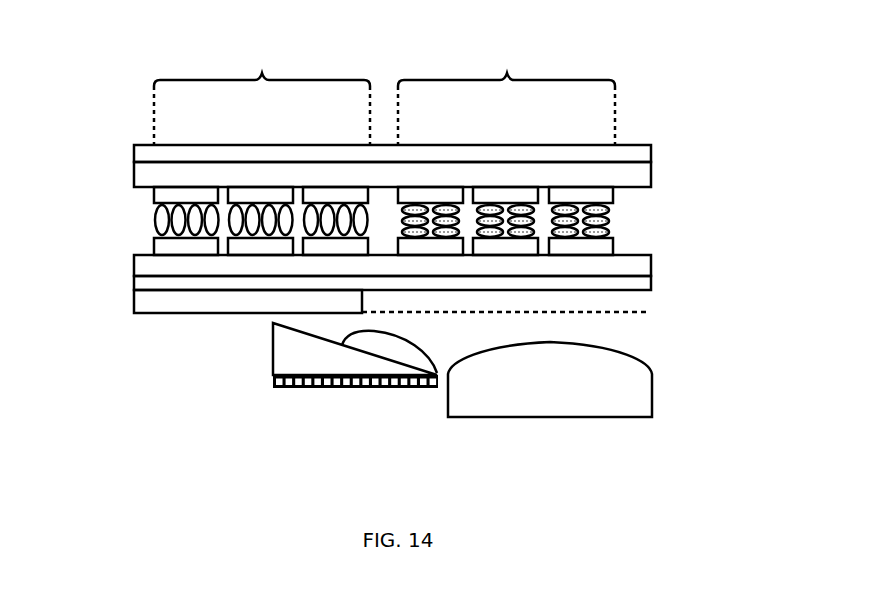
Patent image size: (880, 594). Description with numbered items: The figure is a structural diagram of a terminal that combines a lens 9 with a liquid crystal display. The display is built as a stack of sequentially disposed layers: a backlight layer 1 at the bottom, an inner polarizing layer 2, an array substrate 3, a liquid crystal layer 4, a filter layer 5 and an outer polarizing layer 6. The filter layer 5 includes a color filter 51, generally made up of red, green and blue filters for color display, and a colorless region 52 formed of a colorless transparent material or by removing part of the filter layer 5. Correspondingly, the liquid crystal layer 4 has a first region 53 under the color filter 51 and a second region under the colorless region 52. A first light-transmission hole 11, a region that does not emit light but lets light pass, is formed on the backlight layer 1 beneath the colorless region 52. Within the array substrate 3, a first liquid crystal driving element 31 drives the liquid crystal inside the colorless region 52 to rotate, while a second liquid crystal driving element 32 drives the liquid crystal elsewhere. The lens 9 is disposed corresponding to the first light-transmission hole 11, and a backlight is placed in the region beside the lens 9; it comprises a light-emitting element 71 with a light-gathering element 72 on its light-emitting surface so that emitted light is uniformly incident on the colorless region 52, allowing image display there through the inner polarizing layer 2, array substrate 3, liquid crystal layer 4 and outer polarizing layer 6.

The backlight layer 1 is at (157, 307).
The inner polarizing layer 2 is at (144, 285).
The array substrate 3 is at (640, 270).
The first liquid crystal driving element 31 is at (600, 250).
The second liquid crystal driving element 32 is at (155, 248).
The liquid crystal layer 4 is at (618, 222).
The filter layer 5 is at (633, 172).
The color filter 51 is at (155, 193).
The colorless region 52 is at (506, 95).
The first region 53 is at (262, 94).
The outer polarizing layer 6 is at (633, 155).
The lens 9 is at (573, 388).
The first light-transmission hole 11 is at (545, 305).
The light-emitting element 71 is at (317, 388).
The light-gathering element 72 is at (302, 367).